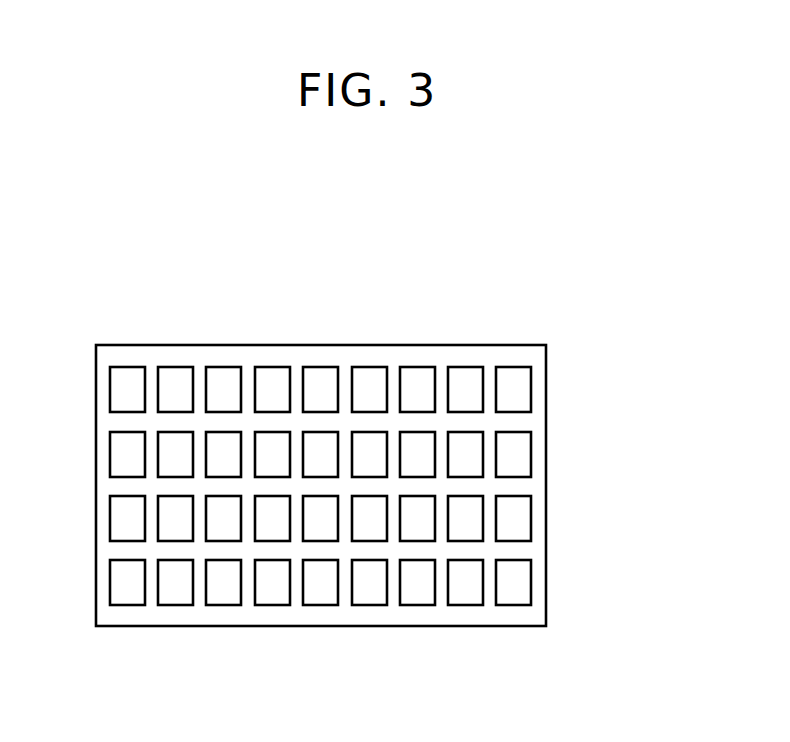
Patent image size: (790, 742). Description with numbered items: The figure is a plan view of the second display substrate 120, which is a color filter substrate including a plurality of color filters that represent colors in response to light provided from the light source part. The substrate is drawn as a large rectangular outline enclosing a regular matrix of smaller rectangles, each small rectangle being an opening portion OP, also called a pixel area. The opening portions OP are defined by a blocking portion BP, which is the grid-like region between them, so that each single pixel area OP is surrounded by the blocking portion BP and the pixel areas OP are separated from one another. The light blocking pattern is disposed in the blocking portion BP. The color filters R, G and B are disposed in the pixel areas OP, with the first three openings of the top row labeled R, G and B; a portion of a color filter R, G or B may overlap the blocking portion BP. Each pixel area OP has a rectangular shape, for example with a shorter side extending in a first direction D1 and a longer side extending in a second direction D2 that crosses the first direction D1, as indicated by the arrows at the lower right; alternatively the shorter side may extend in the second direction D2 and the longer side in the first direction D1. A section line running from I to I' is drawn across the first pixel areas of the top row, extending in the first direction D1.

The second display substrate 120 is at (118, 255).
The blocking portion BP is at (333, 351).
The opening portion OP is at (368, 379).
The color filter R is at (125, 367).
The color filter G is at (173, 367).
The color filter B is at (221, 367).
The section line I is at (146, 391).
The section line I' is at (259, 393).
The first direction D1 is at (610, 612).
The second direction D2 is at (610, 612).